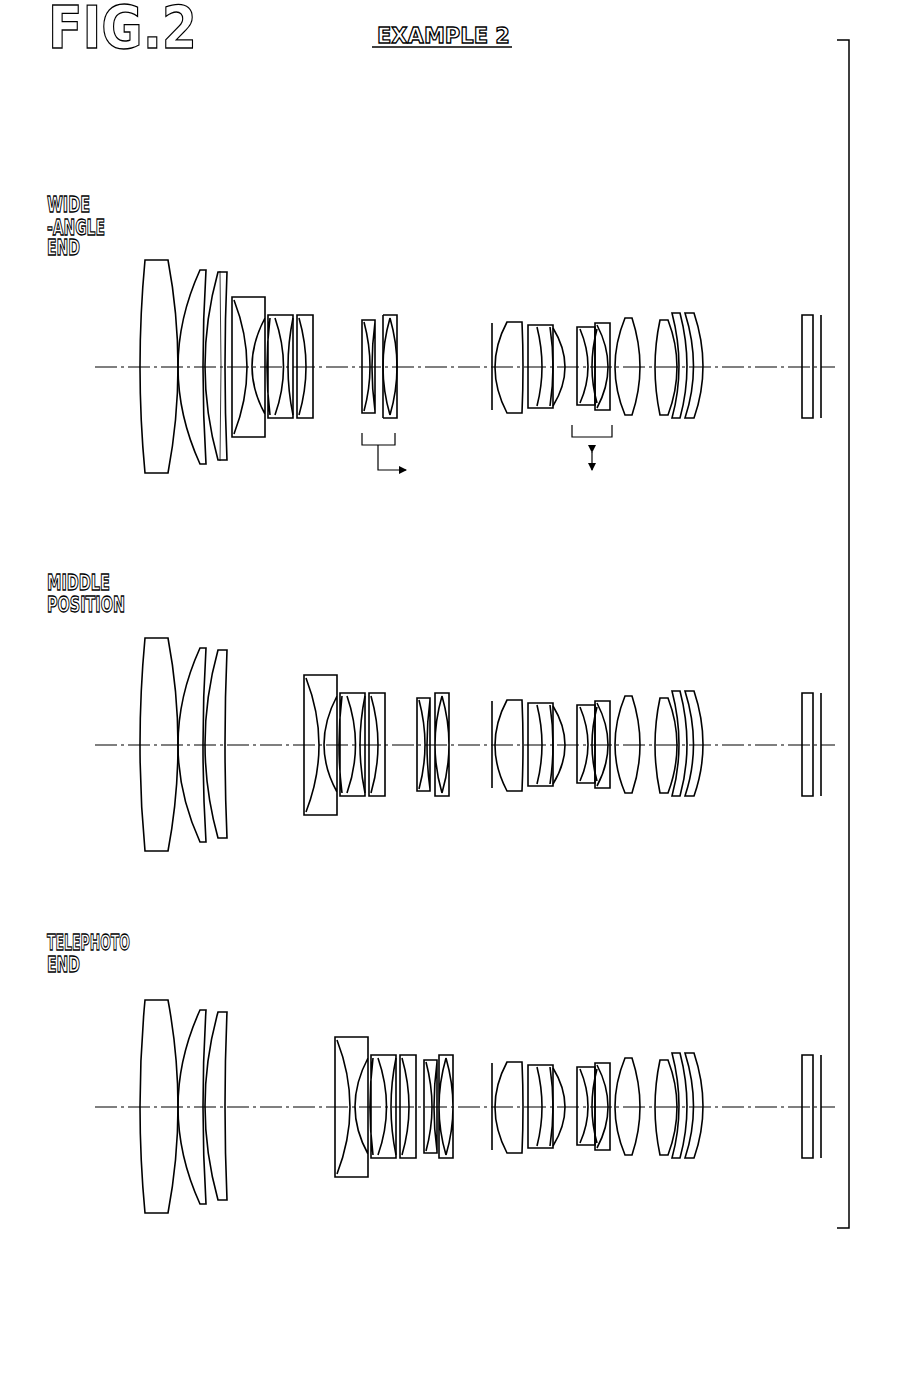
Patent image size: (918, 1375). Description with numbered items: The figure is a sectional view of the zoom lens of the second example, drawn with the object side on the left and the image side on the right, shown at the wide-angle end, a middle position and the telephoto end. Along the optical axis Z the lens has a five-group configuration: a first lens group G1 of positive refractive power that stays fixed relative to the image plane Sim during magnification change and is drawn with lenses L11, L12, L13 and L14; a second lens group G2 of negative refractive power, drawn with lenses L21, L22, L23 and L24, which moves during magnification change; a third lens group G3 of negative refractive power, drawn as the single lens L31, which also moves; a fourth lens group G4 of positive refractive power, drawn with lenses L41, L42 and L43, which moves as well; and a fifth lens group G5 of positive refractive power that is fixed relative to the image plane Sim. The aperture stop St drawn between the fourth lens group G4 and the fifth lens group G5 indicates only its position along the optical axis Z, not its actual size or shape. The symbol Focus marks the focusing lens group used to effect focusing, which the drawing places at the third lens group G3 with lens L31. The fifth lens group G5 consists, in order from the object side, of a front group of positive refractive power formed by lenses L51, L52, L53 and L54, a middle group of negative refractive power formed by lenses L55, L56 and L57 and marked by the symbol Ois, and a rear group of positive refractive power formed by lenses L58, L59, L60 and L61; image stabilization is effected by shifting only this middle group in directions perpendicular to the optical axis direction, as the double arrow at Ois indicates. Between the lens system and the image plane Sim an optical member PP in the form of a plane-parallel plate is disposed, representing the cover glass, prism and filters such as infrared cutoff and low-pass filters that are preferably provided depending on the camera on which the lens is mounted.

The first lens group G1 is at (160, 653).
The second lens group G2 is at (321, 672).
The third lens group G3 is at (399, 640).
The fourth lens group G4 is at (444, 635).
The fifth lens group G5 is at (657, 625).
The lens L11 is at (152, 258).
The lens L12 is at (168, 265).
The lens L13 is at (200, 270).
The lens L14 is at (225, 270).
The lens L21 is at (233, 296).
The lens L22 is at (280, 314).
The lens L23 is at (294, 314).
The lens L24 is at (306, 314).
The lens L31 is at (368, 319).
The lens L41 is at (386, 314).
The lens L42 is at (391, 314).
The lens L43 is at (396, 314).
The lens L51 is at (510, 321).
The lens L52 is at (532, 324).
The lens L53 is at (545, 324).
The lens L54 is at (560, 326).
The lens L55 is at (582, 326).
The lens L56 is at (598, 322).
The lens L57 is at (606, 322).
The lens L58 is at (628, 317).
The lens L59 is at (665, 319).
The lens L60 is at (676, 312).
The lens L61 is at (750, 274).
The aperture stop St is at (495, 322).
The optical member PP is at (803, 417).
The image plane Sim is at (822, 418).
The optical axis Z is at (465, 712).
The focusing lens group Focus is at (418, 459).
The image stabilizing lens group Ois is at (604, 449).